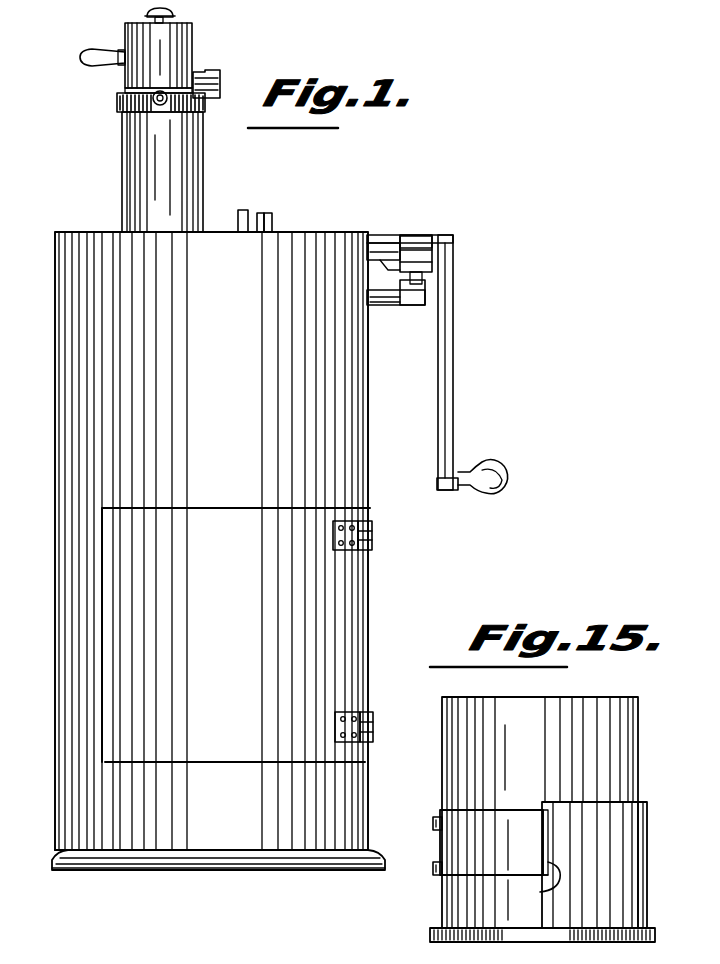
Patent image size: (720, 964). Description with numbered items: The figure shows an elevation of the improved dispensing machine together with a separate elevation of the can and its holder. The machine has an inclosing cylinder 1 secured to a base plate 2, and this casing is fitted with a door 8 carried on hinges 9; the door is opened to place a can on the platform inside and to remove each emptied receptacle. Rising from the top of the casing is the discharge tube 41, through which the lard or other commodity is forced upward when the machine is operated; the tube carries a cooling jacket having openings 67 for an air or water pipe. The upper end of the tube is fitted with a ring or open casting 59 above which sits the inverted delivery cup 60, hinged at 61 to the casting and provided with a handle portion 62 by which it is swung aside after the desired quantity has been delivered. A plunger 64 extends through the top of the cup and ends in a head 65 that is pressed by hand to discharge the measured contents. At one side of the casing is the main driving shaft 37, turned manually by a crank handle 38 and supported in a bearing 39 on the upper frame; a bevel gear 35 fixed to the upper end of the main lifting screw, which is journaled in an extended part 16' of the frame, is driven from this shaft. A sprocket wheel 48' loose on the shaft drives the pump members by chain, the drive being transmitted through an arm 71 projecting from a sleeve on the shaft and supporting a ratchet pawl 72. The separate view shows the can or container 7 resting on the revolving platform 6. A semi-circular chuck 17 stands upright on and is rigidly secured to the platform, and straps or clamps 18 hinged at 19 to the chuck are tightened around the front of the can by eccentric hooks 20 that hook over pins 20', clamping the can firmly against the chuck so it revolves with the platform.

In FIG. 1, the inclosing cylinder 1 is at (211, 541).
In FIG. 1, the base plate 2 is at (244, 862).
In FIG. 1, the door 8 is at (236, 635).
In FIG. 1, the hinges 9 is at (374, 729).
In FIG. 1, the discharge tube 41 is at (140, 178).
In FIG. 1, the ring or open casting 59 is at (118, 103).
In FIG. 1, the delivery cup 60 is at (185, 48).
In FIG. 1, the hinge 61 is at (212, 72).
In FIG. 1, the handle portion 62 is at (86, 60).
In FIG. 1, the plunger 64 is at (147, 15).
In FIG. 1, the head 65 is at (176, 14).
In FIG. 1, the openings 67 is at (155, 105).
In FIG. 1, the sprocket wheel 48' is at (249, 204).
In FIG. 1, the arm 71 is at (272, 220).
In FIG. 1, the ratchet pawl 72 is at (262, 212).
In FIG. 1, the bevel gear 35 is at (404, 240).
In FIG. 1, the main driving shaft 37 is at (380, 244).
In FIG. 1, the bearing 39 is at (414, 238).
In FIG. 1, the crank handle 38 is at (450, 320).
In FIG. 1, the extended part 16' is at (397, 314).
In FIG. 15, the can or container 7 is at (540, 812).
In FIG. 15, the semi-circular chuck 17 is at (627, 885).
In FIG. 15, the straps or clamps 18 is at (494, 842).
In FIG. 15, the hinge 19 is at (540, 893).
In FIG. 15, the eccentric hooks 20 is at (417, 807).
In FIG. 15, the pins 20' is at (411, 881).
In FIG. 15, the revolving platform 6 is at (435, 930).